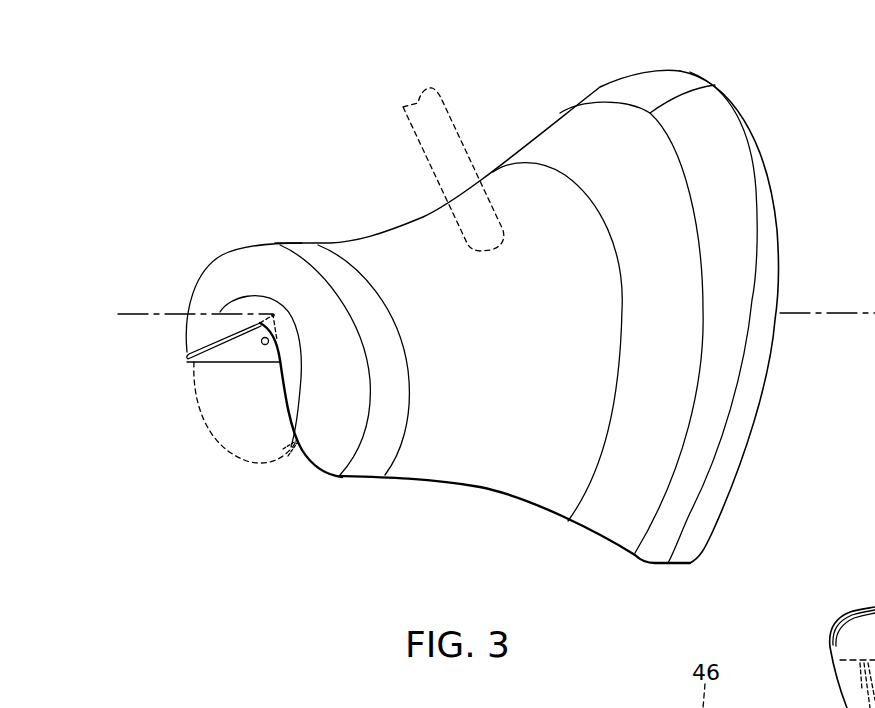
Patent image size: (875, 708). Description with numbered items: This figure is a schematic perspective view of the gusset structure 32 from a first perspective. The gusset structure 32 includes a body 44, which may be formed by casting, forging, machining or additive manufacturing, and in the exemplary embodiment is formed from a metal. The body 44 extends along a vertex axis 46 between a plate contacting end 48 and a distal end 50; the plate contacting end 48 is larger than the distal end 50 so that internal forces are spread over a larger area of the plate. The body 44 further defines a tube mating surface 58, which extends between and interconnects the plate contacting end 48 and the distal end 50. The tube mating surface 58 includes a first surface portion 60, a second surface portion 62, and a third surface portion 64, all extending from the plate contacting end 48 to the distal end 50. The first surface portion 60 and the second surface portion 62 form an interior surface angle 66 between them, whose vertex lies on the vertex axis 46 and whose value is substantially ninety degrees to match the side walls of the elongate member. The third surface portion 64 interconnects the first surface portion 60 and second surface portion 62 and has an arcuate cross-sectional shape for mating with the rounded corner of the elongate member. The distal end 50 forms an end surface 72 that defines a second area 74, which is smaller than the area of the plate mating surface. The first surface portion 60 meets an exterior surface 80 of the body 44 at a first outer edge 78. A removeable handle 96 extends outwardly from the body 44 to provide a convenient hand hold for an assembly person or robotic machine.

The gusset structure 32 is at (317, 168).
The body 44 is at (435, 234).
The vertex axis 46 is at (122, 314).
The plate contacting end 48 is at (735, 480).
The distal end 50 is at (236, 315).
The tube mating surface 58 is at (251, 342).
The first surface portion 60 is at (296, 424).
The second surface portion 62 is at (224, 343).
The third surface portion 64 is at (277, 341).
The interior surface angle 66 is at (233, 458).
The end surface 72 is at (297, 372).
The second area 74 is at (217, 326).
The first outer edge 78 is at (874, 586).
The exterior surface 80 is at (515, 424).
The removeable handle 96 is at (455, 130).